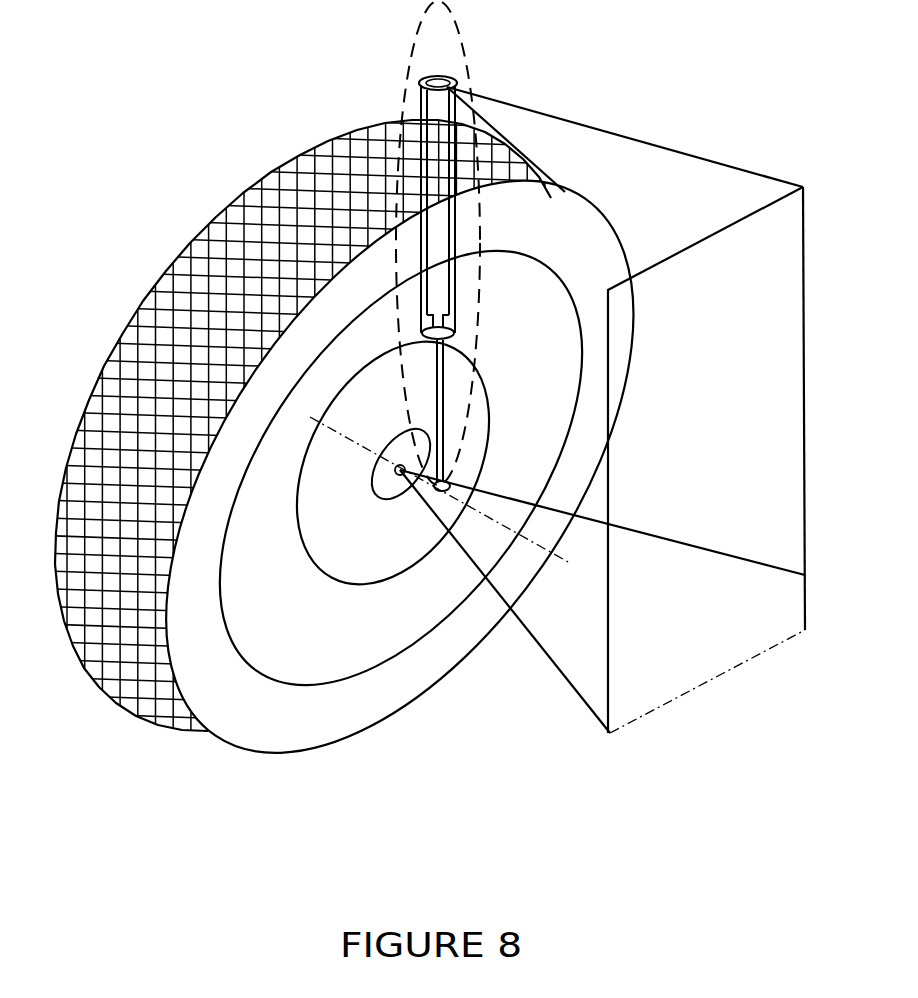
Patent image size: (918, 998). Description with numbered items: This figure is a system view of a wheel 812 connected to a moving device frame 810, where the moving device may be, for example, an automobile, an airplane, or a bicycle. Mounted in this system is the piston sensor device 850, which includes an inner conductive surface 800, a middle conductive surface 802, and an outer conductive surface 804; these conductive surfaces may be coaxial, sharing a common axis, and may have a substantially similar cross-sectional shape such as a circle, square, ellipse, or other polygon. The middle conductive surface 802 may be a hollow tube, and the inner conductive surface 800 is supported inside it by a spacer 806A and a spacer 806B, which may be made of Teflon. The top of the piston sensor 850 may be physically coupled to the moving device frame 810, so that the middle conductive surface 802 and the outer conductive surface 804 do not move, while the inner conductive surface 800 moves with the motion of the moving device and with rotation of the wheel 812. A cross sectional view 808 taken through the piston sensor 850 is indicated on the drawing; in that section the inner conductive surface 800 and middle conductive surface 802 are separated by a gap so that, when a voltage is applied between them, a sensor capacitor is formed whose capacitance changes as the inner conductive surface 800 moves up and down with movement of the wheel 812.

The inner conductive surface 800 is at (402, 348).
The middle conductive surface 802 is at (430, 233).
The outer conductive surface 804 is at (470, 112).
The spacer 806A is at (410, 66).
The spacer 806B is at (398, 382).
The cross sectional view 808 is at (573, 203).
The moving device frame 810 is at (600, 697).
The wheel 812 is at (293, 727).
The piston sensor device 850 is at (403, 107).